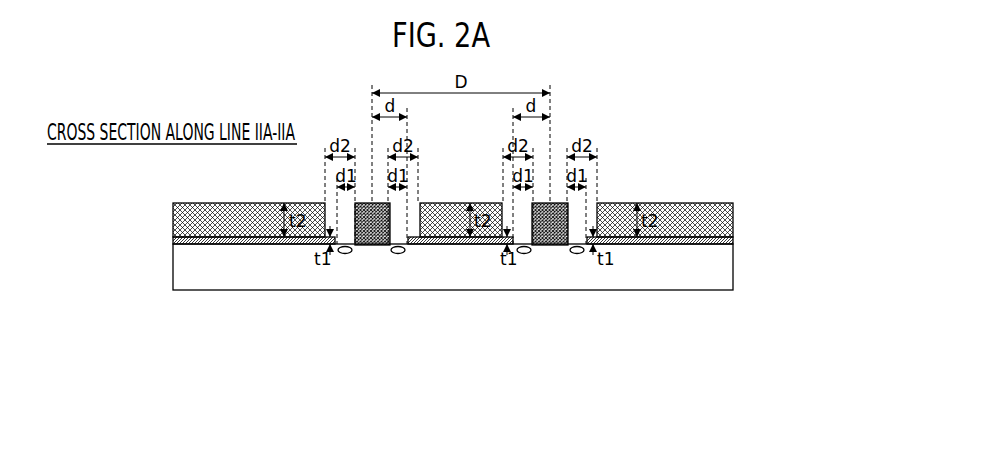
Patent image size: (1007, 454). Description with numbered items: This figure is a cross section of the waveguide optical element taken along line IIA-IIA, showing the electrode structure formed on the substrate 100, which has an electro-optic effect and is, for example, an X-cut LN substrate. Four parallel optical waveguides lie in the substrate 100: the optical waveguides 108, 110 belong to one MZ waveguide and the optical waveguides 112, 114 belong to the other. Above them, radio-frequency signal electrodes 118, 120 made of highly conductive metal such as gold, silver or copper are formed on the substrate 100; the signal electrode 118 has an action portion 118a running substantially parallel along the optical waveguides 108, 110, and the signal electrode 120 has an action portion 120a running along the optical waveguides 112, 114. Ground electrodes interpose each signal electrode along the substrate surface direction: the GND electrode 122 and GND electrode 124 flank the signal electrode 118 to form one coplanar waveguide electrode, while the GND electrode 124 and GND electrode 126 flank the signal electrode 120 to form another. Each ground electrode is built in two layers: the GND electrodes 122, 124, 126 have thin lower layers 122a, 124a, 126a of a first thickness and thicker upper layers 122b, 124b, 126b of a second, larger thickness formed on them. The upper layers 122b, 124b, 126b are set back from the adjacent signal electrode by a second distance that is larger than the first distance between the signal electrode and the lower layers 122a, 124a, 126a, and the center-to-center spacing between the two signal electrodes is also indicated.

The substrate 100 is at (712, 283).
The optical waveguide 108 is at (345, 254).
The optical waveguide 110 is at (398, 254).
The optical waveguide 112 is at (524, 254).
The optical waveguide 114 is at (577, 254).
The signal electrode 118 is at (334, 297).
The action portion 118a is at (373, 212).
The signal electrode 120 is at (580, 312).
The action portion 120a is at (546, 238).
The GND electrode 122 is at (192, 249).
The lower layer 122a is at (173, 243).
The upper layer 122b is at (190, 217).
The GND electrode 124 is at (721, 249).
The lower layer 124a is at (717, 220).
The upper layer 124b is at (730, 248).
The GND electrode 126 is at (458, 293).
The lower layer 126a is at (445, 225).
The upper layer 126b is at (453, 243).